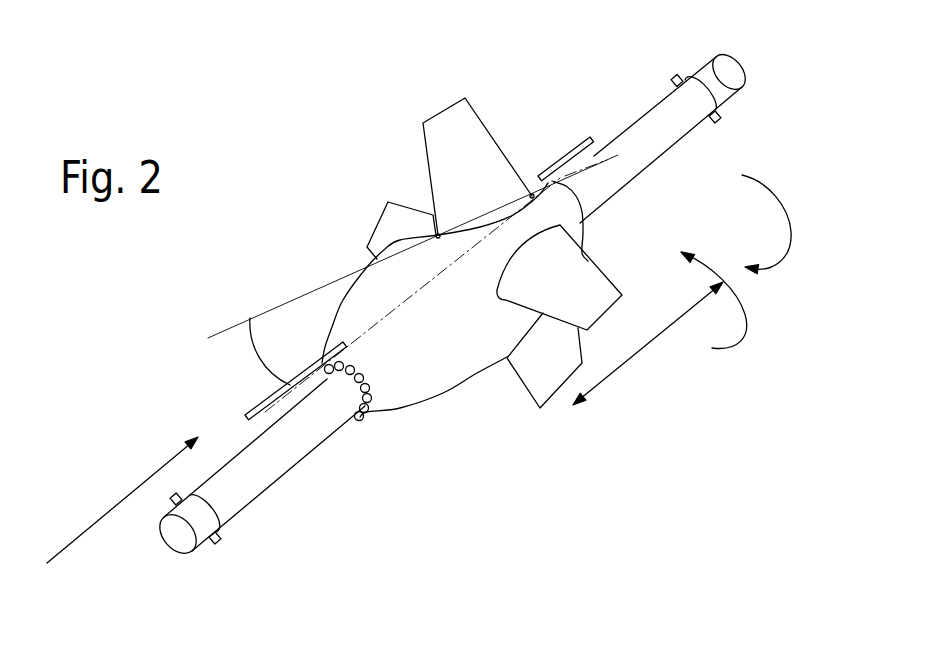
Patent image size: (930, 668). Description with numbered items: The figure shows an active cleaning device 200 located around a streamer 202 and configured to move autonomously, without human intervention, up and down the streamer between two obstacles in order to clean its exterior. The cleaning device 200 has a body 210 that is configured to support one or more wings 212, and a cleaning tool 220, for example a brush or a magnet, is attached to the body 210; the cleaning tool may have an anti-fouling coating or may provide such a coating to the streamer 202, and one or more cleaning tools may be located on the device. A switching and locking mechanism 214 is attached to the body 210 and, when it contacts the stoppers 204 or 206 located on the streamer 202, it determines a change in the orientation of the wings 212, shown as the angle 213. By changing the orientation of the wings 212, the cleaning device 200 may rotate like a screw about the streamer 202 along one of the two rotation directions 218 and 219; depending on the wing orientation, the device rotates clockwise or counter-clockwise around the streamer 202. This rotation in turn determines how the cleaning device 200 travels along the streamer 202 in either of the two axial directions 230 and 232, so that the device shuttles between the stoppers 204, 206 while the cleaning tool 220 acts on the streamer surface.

The cleaning device 200 is at (340, 140).
The streamer 202 is at (652, 108).
The stopper 204 is at (213, 542).
The stopper 206 is at (721, 118).
The body 210 is at (443, 367).
The wings 212 is at (494, 136).
The angle 213 is at (260, 363).
The switching and locking mechanism 214 is at (299, 377).
The direction 218 is at (751, 312).
The direction 219 is at (780, 200).
The cleaning tool 220 is at (361, 419).
The direction 230 is at (90, 526).
The direction 232 is at (625, 365).